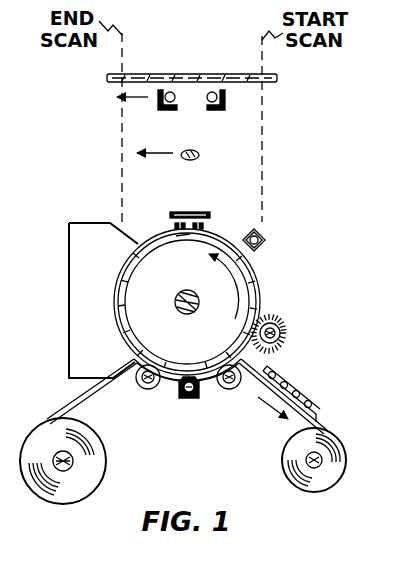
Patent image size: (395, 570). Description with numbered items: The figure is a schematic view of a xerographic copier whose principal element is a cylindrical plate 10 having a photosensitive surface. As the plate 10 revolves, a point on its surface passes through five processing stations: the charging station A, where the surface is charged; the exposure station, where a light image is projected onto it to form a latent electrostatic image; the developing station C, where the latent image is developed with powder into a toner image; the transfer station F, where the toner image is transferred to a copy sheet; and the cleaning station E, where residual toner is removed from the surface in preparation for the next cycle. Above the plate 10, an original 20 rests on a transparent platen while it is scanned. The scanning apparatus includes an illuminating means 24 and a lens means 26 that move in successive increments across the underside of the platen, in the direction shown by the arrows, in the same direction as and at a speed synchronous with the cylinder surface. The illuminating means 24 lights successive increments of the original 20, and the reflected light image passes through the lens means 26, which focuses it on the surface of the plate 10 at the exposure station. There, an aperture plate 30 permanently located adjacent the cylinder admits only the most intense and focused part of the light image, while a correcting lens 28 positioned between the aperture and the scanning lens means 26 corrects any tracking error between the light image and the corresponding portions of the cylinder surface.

The plate 10 is at (264, 288).
The original 20 is at (203, 73).
The illuminating means 24 is at (219, 114).
The lens means 26 is at (180, 165).
The correcting lens 28 is at (200, 212).
The aperture plate 30 is at (190, 235).
The charging station A is at (270, 252).
The developing station C is at (41, 331).
The cleaning station E is at (296, 349).
The transfer station F is at (181, 424).